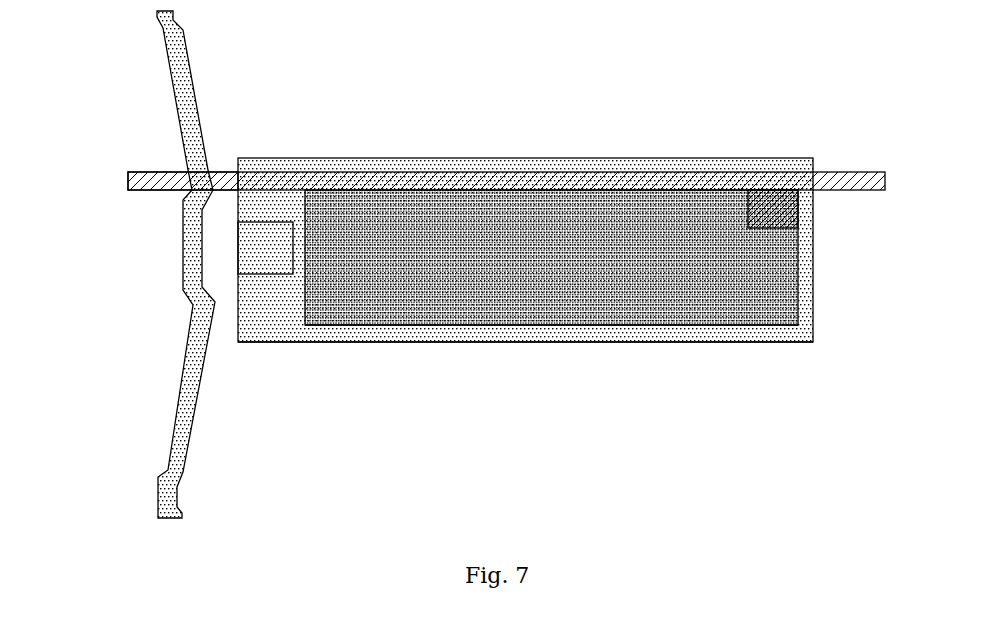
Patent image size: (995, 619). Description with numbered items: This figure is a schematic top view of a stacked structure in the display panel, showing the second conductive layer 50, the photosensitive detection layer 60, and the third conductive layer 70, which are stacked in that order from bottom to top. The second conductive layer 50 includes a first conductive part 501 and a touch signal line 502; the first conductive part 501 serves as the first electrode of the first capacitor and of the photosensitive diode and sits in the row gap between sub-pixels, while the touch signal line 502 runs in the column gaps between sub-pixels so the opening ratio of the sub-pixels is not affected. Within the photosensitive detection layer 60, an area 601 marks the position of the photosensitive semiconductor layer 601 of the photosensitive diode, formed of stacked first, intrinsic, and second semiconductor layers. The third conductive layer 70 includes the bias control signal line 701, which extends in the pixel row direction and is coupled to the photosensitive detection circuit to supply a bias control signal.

The second conductive layer 50 is at (806, 264).
The first conductive part 501 is at (362, 332).
The touch signal line 502 is at (183, 258).
The photosensitive detection layer 60 is at (789, 303).
The photosensitive semiconductor layer 601 is at (505, 313).
The third conductive layer 70 is at (874, 181).
The bias control signal line 701 is at (128, 181).